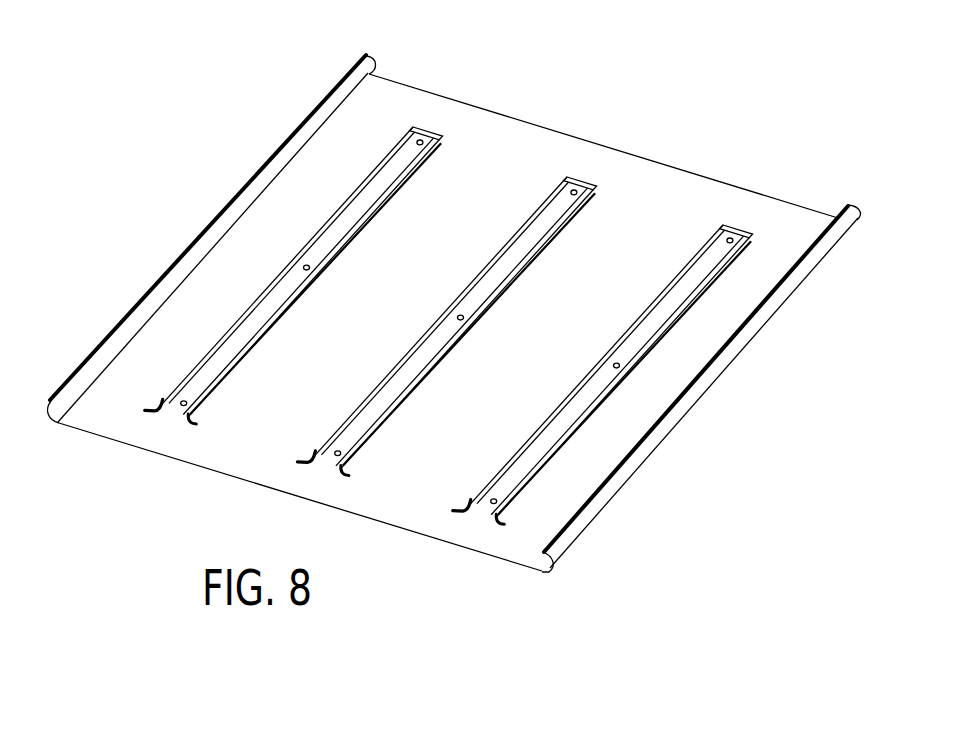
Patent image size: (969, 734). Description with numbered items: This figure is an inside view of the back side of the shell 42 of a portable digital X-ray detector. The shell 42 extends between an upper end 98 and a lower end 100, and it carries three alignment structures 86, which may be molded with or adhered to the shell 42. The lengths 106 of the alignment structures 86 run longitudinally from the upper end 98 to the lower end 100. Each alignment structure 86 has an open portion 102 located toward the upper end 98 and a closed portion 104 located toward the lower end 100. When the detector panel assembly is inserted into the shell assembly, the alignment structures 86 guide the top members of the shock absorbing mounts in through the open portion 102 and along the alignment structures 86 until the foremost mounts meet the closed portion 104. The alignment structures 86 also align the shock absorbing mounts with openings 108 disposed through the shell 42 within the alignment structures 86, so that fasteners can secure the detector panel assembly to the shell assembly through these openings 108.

The shell 42 is at (200, 132).
The alignment structures 86 is at (720, 227).
The upper end 98 is at (140, 447).
The lower end 100 is at (433, 92).
The open portion 102 is at (491, 506).
The closed portion 104 is at (738, 232).
The lengths 106 is at (672, 327).
The openings 108 is at (303, 265).